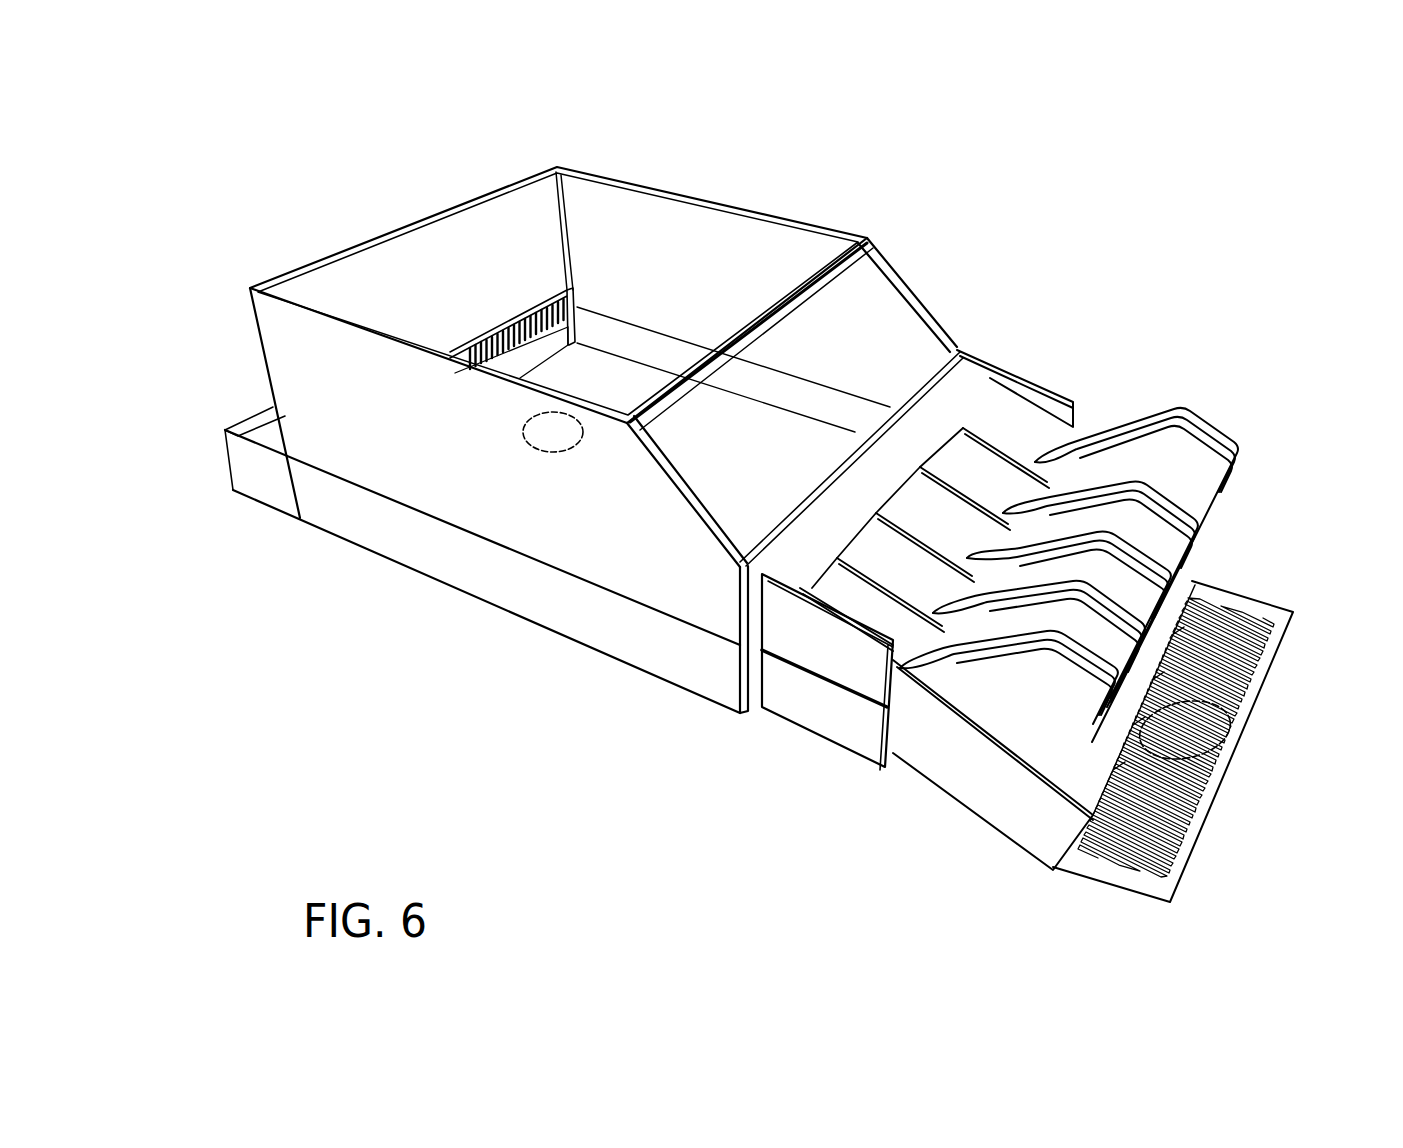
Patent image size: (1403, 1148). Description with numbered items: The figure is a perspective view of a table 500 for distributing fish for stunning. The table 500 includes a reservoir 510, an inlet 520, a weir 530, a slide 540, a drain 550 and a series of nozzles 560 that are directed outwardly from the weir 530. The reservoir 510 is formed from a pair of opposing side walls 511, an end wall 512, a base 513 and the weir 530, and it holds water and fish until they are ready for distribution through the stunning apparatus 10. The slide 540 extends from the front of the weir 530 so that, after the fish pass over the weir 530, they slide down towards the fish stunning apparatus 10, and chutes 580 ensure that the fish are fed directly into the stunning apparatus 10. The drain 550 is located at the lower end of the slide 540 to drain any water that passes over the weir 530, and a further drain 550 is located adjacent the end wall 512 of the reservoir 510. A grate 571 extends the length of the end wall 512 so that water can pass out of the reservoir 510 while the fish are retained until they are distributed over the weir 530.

The stunning apparatus 10 is at (1210, 437).
The table 500 is at (1085, 205).
The reservoir 510 is at (598, 373).
The side walls 511 is at (733, 257).
The end wall 512 is at (395, 292).
The base 513 is at (776, 470).
The inlet 520 is at (527, 437).
The weir 530 is at (933, 420).
The slide 540 is at (1020, 433).
The drain 550 is at (1228, 740).
The nozzles 560 is at (700, 512).
The grate 571 is at (556, 288).
The chutes 580 is at (932, 512).